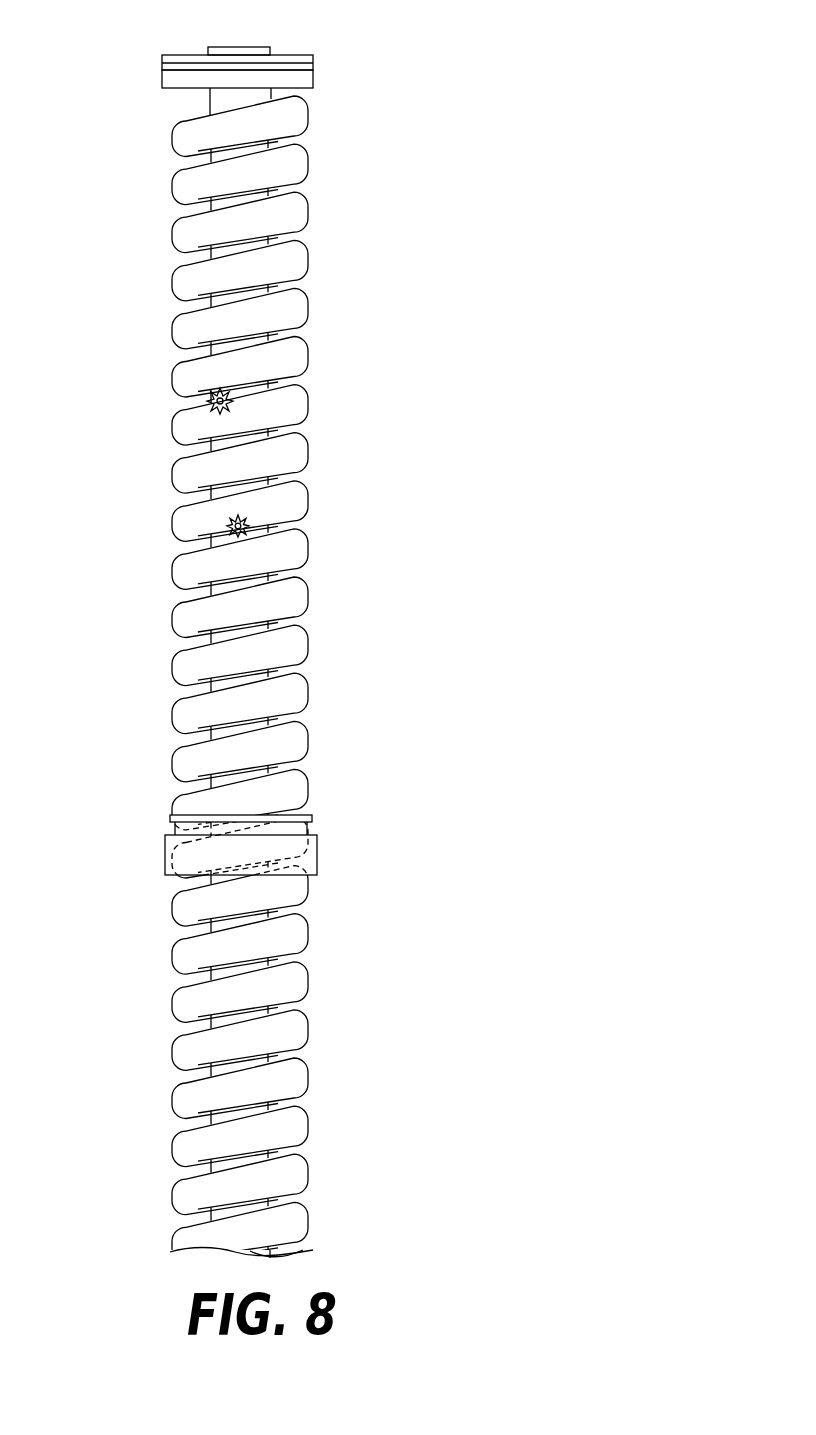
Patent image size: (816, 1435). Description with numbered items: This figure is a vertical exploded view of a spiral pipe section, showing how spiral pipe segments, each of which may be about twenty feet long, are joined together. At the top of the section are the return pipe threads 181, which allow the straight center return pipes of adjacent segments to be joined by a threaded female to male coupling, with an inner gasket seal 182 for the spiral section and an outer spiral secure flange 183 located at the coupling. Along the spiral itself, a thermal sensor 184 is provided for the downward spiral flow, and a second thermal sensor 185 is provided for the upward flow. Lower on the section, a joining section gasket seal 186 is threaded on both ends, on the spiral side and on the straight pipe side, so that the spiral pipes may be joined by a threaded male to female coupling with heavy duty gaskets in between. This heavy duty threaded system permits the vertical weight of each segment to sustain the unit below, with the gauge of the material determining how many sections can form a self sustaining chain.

The return pipe threads 181 is at (287, 48).
The inner gasket seal 182 is at (317, 60).
The outer spiral secure flange 183 is at (287, 73).
The thermal sensor for downward spiral flow 184 is at (214, 389).
The thermal sensor for upward flow 185 is at (250, 518).
The joining section gasket seal 186 is at (318, 822).